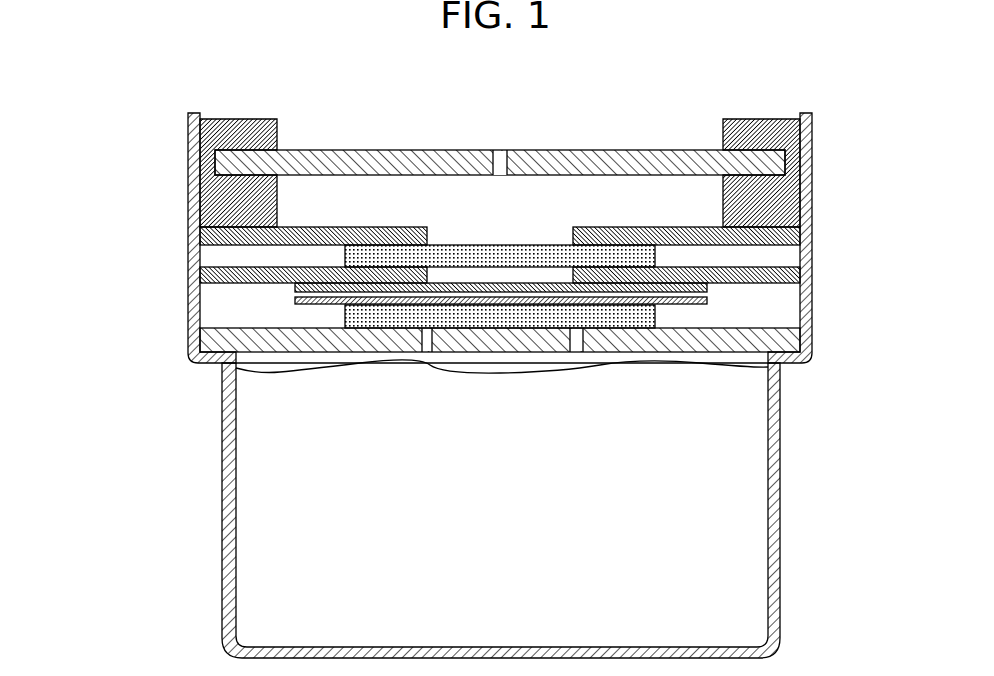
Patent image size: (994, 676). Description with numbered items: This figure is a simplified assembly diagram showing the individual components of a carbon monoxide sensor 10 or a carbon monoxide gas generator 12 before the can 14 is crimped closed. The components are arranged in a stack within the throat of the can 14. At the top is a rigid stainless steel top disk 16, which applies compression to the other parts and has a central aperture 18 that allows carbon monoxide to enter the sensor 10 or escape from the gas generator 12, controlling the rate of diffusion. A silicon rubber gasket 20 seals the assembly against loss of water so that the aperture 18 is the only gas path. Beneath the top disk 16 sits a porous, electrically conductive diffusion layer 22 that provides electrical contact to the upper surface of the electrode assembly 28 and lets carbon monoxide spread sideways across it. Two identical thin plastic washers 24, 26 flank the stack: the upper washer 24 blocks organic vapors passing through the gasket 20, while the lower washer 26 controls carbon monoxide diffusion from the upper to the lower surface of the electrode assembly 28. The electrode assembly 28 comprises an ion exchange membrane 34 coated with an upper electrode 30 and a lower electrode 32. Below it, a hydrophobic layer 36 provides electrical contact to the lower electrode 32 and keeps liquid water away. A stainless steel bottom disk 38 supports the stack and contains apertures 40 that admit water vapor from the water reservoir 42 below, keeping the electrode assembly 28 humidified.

The carbon monoxide sensor 10 is at (146, 135).
The carbon monoxide gas generator 12 is at (478, 349).
The can 14 is at (188, 170).
The top disk 16 is at (608, 152).
The aperture 18 is at (498, 150).
The gasket 20 is at (232, 119).
The diffusion layer 22 is at (655, 258).
The upper plastic washer 24 is at (200, 232).
The lower plastic washer 26 is at (200, 272).
The electrode assembly 28 is at (278, 309).
The upper electrode 30 is at (295, 286).
The lower electrode 32 is at (295, 301).
The ion exchange membrane 34 is at (295, 294).
The hydrophobic layer 36 is at (655, 311).
The bottom disk 38 is at (805, 333).
The apertures 40 is at (427, 352).
The water reservoir 42 is at (713, 568).